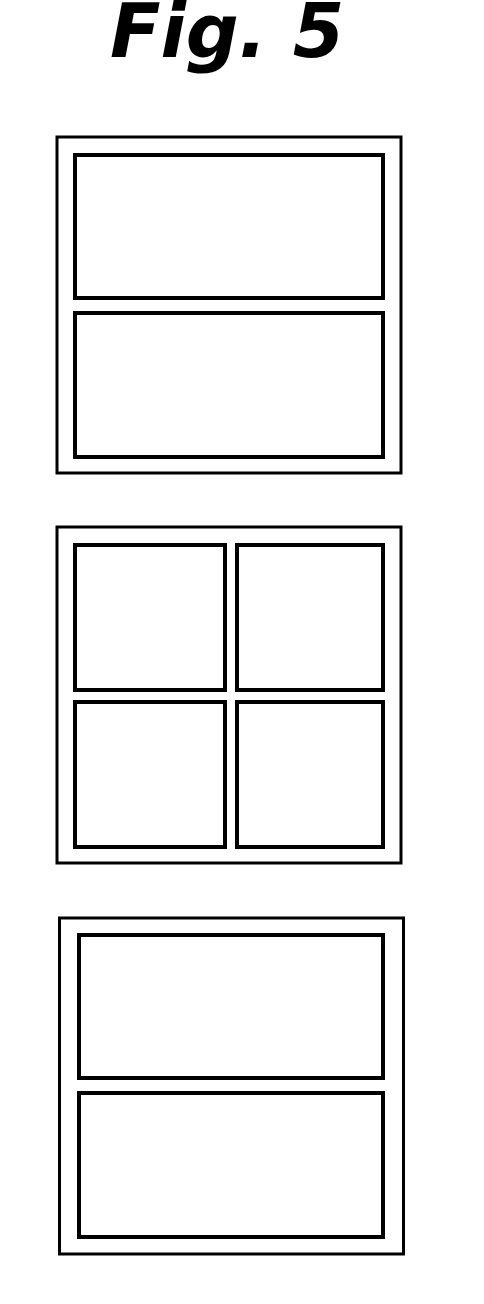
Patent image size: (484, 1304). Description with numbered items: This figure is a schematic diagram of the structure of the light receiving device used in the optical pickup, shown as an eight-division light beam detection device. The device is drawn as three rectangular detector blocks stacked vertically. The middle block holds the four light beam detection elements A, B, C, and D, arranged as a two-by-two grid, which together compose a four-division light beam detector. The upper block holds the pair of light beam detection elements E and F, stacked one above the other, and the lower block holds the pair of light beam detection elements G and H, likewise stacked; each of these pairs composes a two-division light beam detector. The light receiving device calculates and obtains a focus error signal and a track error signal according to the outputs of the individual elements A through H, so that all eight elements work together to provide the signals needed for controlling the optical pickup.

The light beam detection element A is at (150, 617).
The light beam detection element B is at (150, 774).
The light beam detection element C is at (310, 774).
The light beam detection element D is at (310, 617).
The light beam detection element E is at (229, 226).
The light beam detection element F is at (229, 385).
The light beam detection element G is at (231, 1006).
The light beam detection element H is at (231, 1165).